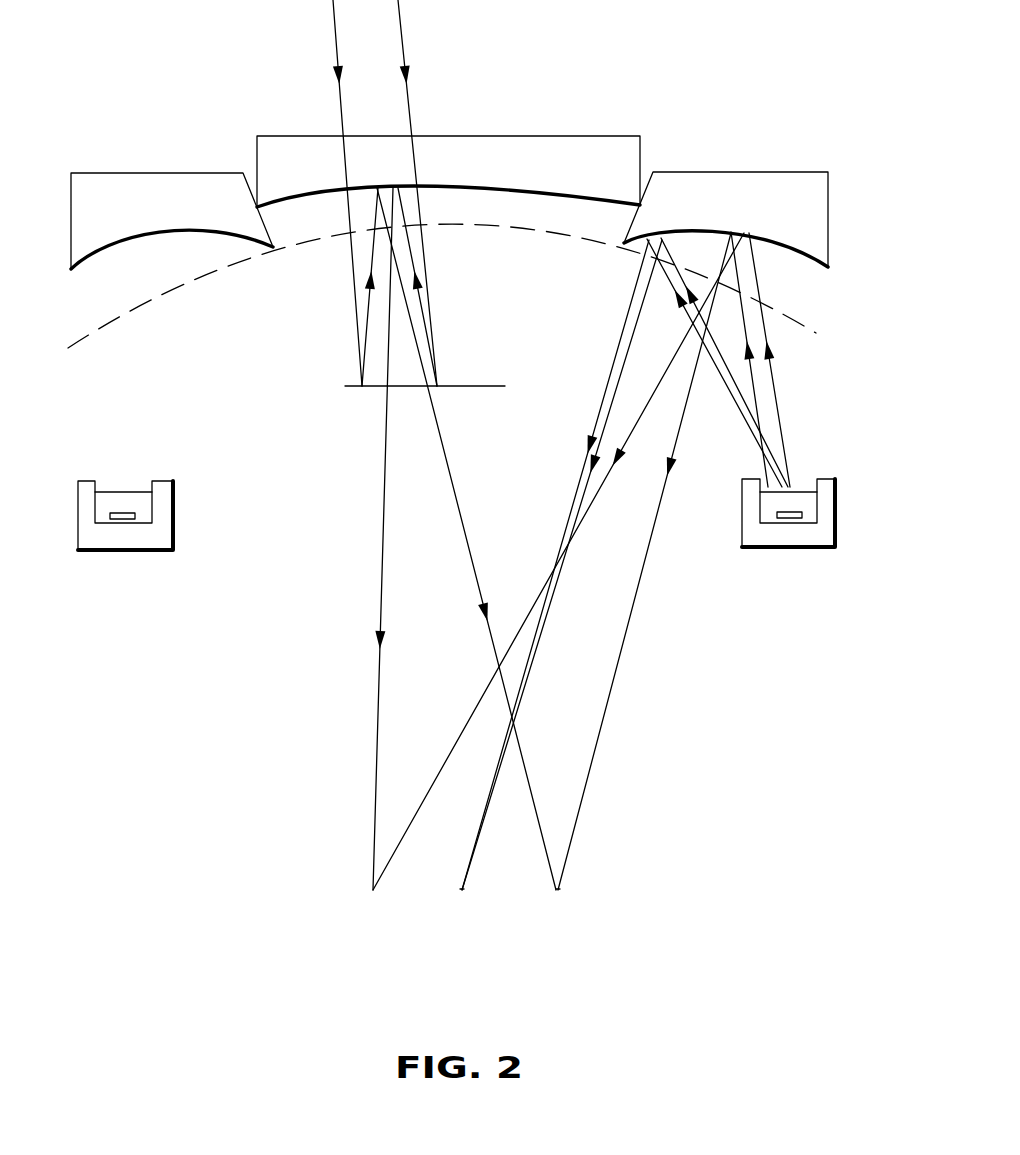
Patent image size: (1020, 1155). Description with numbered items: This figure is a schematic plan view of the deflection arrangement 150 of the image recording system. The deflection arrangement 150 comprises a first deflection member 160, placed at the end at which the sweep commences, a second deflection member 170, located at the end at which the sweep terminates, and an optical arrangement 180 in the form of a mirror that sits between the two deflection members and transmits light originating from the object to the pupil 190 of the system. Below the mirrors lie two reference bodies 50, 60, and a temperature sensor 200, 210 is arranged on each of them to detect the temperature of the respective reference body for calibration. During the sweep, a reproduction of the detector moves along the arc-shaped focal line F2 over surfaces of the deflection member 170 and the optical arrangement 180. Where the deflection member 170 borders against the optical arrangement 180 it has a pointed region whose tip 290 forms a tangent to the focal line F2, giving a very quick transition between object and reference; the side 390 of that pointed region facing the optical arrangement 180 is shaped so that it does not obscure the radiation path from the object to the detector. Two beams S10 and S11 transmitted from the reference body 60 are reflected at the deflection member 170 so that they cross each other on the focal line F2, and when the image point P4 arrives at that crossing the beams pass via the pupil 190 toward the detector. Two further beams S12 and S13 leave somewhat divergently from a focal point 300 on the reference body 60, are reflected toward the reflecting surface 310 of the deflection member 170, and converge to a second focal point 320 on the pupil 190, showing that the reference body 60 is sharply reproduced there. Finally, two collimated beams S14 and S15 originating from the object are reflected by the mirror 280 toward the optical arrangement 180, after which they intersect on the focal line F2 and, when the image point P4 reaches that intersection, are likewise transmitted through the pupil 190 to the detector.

The reference body 50 is at (169, 539).
The reference body 60 is at (822, 553).
The deflection arrangement 150 is at (668, 171).
The first deflection member 160 is at (122, 245).
The second deflection member 170 is at (781, 172).
The optical arrangement 180 is at (517, 189).
The pupil 190 is at (580, 880).
The temperature sensor 200 is at (140, 519).
The temperature sensor 210 is at (805, 513).
The mirror 280 is at (357, 388).
The tip 290 is at (625, 245).
The focal point 300 is at (790, 485).
The reflecting surface 310 is at (788, 248).
The second focal point 320 is at (467, 892).
The side of the pointed region 390 is at (637, 213).
The focal line F2 is at (187, 282).
The image point P4 is at (708, 283).
The beam S10 is at (626, 668).
The beam S11 is at (553, 612).
The beam S12 is at (712, 316).
The beam S13 is at (622, 374).
The collimated beam S14 is at (333, 28).
The collimated beam S15 is at (400, 22).